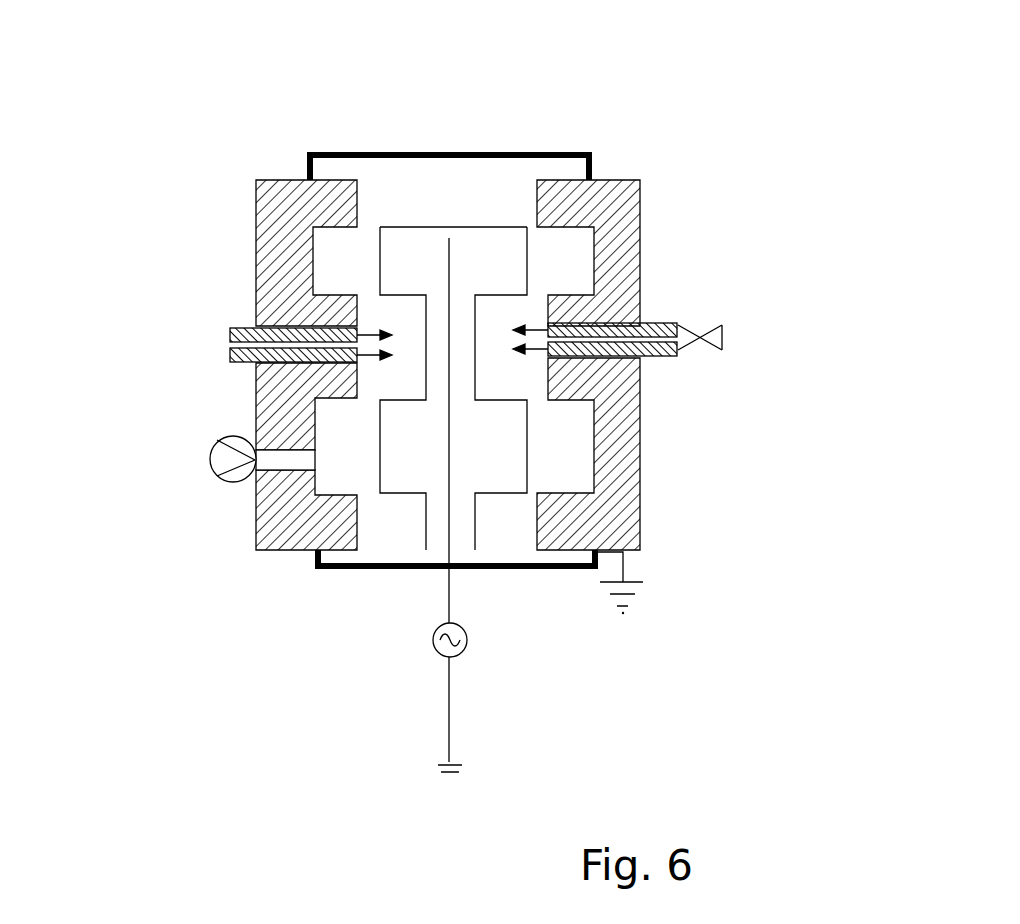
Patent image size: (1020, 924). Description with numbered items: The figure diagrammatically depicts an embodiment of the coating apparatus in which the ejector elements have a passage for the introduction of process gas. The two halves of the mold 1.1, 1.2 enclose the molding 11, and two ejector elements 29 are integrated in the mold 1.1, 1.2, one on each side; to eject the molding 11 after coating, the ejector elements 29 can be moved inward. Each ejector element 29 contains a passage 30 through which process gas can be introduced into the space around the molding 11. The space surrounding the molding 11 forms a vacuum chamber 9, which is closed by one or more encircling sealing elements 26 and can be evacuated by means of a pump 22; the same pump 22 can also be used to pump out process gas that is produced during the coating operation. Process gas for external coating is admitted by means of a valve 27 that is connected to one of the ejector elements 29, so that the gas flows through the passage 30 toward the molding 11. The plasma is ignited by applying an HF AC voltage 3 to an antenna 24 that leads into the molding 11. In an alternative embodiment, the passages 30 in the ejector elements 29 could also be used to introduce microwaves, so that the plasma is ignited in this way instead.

The mold 1.1 is at (256, 230).
The mold 1.2 is at (641, 182).
The HF AC voltage 3 is at (433, 640).
The vacuum chamber 9 is at (553, 267).
The molding 11 is at (485, 262).
The pump 22 is at (220, 480).
The antenna 24 is at (445, 268).
The sealing element 26 is at (560, 152).
The valve 27 is at (722, 328).
The ejector element 29 is at (256, 360).
The passage 30 is at (232, 345).